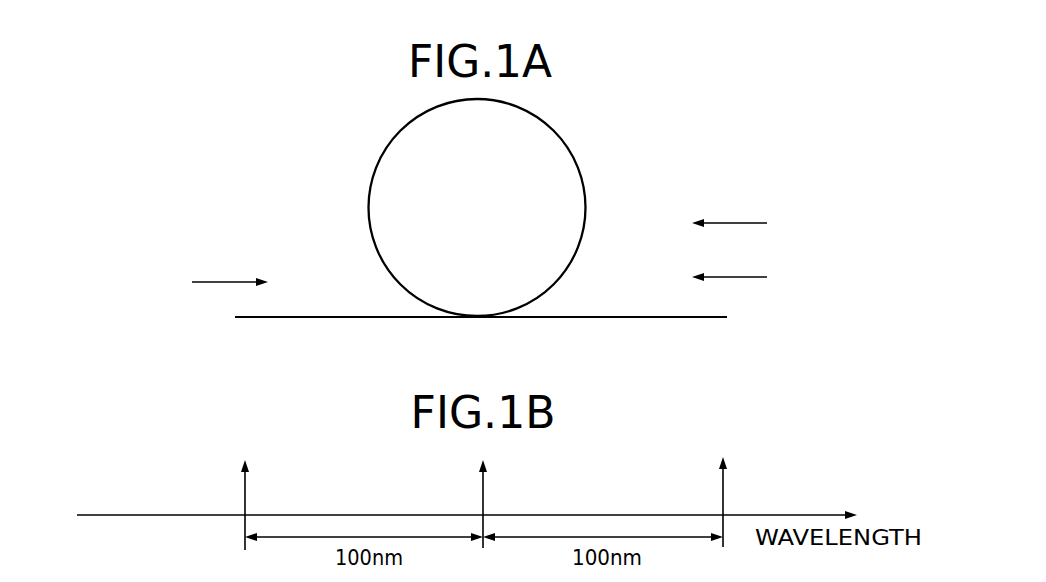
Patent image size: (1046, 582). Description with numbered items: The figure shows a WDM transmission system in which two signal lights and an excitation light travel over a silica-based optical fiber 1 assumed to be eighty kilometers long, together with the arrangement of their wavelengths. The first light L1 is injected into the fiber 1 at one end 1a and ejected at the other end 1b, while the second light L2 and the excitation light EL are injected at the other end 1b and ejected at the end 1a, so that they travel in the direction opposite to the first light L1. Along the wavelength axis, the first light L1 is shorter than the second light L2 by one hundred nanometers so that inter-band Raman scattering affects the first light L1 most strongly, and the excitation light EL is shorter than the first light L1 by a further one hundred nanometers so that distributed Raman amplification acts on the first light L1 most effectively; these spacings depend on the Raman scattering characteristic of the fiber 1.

In FIG. 1A, the optical fiber 1 is at (572, 153).
In FIG. 1A, the one end of optical fiber 1a is at (234, 318).
In FIG. 1A, the other end of optical fiber 1b is at (728, 318).
In FIG. 1A, the first light L1 is at (222, 281).
In FIG. 1B, the first light L1 is at (485, 488).
In FIG. 1A, the second light L2 is at (740, 276).
In FIG. 1B, the second light L2 is at (725, 487).
In FIG. 1A, the excitation light EL is at (740, 222).
In FIG. 1B, the excitation light EL is at (247, 488).